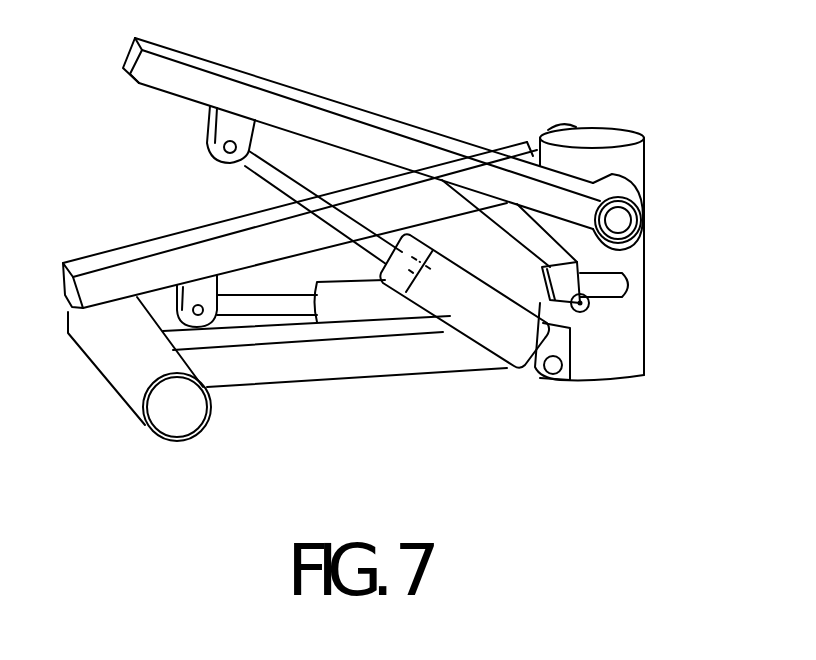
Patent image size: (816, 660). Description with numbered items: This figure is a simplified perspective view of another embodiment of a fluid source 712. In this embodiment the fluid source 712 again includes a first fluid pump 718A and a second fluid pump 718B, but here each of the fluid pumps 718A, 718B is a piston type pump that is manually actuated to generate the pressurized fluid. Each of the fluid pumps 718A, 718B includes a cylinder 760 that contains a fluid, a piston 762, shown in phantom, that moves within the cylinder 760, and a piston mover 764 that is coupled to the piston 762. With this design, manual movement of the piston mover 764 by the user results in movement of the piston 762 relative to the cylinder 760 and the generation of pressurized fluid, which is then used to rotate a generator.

The fluid source 712 is at (383, 107).
The piston mover 764 is at (258, 167).
The cylinder 760 is at (477, 327).
The piston 762 is at (406, 292).
The first fluid pump 718A is at (512, 357).
The second fluid pump 718B is at (337, 303).